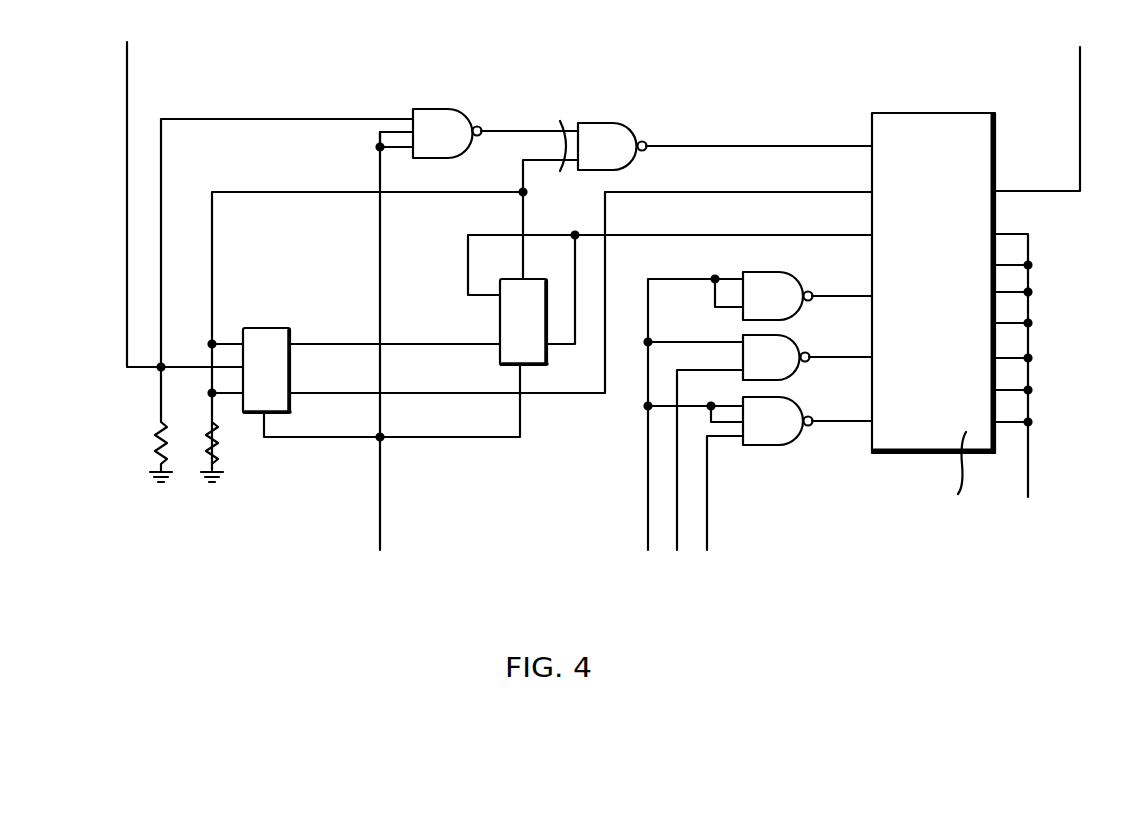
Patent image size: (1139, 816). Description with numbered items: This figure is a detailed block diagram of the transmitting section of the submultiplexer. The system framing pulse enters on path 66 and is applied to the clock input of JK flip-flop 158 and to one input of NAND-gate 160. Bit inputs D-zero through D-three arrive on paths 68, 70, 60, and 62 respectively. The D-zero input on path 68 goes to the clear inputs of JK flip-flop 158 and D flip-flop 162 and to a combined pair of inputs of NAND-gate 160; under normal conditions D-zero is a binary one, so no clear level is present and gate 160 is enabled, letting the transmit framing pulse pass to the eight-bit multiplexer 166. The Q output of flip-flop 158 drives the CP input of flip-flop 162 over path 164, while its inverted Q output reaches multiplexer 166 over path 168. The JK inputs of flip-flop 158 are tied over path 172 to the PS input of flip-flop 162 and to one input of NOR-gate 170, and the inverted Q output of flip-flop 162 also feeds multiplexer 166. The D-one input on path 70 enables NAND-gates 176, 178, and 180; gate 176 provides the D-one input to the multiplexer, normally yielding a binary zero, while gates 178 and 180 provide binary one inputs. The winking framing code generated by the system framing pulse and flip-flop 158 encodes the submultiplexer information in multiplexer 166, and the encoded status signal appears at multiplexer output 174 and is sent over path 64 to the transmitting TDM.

The path 66 is at (129, 78).
The path 64 is at (1082, 82).
The NAND-gate 160 is at (437, 109).
The NOR-gate 170 is at (597, 121).
The 8-bit multiplexer 166 is at (928, 113).
The multiplexer output 174 is at (997, 190).
The path 172 is at (283, 192).
The JK flip-flop 158 is at (263, 328).
The path 164 is at (340, 344).
The D flip-flop 162 is at (500, 315).
The path 168 is at (430, 393).
The NAND-gate 176 is at (797, 319).
The NAND-gate 178 is at (795, 380).
The NAND-gate 180 is at (797, 444).
The path 68 is at (381, 530).
The path 70 is at (646, 530).
The path 60 is at (679, 505).
The path 62 is at (709, 533).